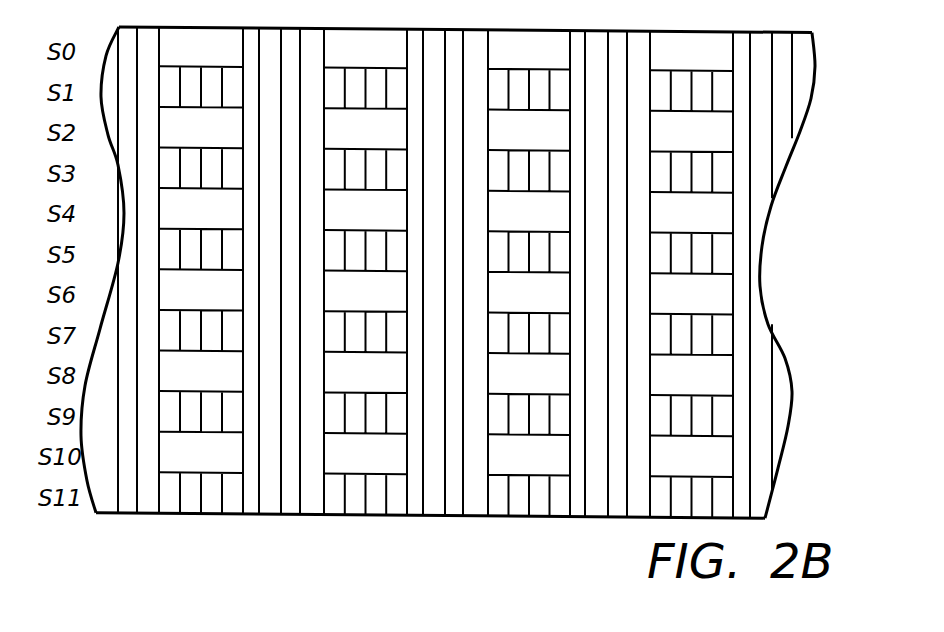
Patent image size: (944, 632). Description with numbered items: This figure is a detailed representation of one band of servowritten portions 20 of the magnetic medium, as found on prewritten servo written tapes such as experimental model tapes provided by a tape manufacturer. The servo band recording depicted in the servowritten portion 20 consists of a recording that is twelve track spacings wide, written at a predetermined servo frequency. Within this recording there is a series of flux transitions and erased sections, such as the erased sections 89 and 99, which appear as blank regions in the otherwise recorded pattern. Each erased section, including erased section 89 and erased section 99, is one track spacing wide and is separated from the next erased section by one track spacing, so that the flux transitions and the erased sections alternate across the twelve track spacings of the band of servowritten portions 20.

The servowritten portion 20 is at (797, 467).
The erased section 89 is at (210, 460).
The erased section 99 is at (374, 458).